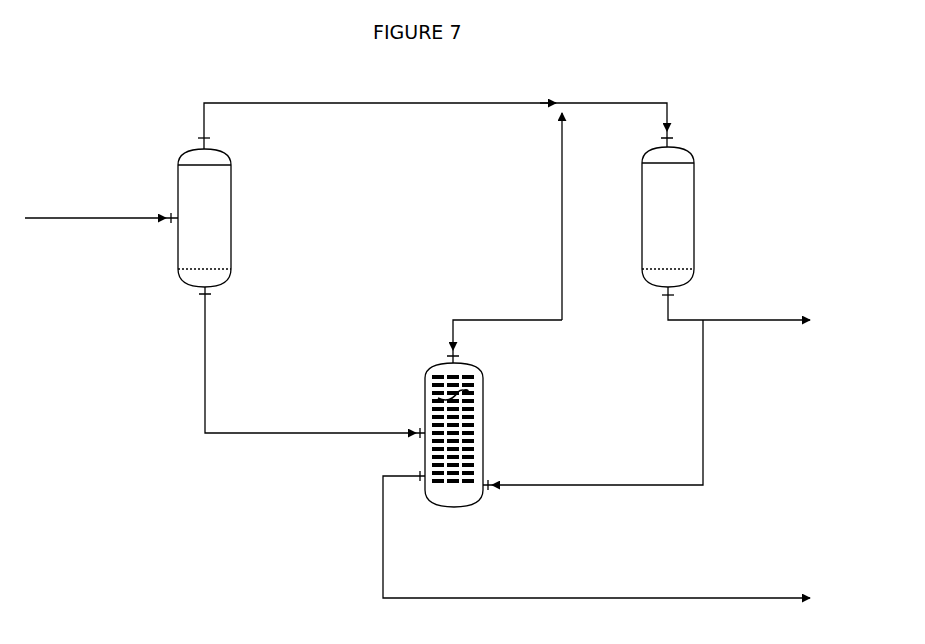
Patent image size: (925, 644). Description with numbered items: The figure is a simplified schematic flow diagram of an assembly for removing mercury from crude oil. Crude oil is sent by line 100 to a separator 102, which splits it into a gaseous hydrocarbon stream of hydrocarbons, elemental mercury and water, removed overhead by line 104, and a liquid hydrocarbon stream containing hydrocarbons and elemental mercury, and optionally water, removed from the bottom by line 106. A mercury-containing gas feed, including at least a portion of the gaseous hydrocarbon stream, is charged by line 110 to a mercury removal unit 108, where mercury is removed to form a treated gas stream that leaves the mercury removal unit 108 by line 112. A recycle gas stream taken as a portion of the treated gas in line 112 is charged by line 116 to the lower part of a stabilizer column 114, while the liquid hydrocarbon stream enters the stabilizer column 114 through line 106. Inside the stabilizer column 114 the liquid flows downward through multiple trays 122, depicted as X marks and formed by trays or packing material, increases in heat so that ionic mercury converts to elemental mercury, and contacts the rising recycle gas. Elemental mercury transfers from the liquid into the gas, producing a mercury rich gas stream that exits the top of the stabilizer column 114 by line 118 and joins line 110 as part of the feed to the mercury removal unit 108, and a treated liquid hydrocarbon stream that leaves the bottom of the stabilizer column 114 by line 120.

The line 100 is at (78, 216).
The separator 102 is at (233, 218).
The line 104 is at (255, 103).
The line 106 is at (206, 366).
The mercury removal unit 108 is at (695, 217).
The line 110 is at (616, 103).
The line 112 is at (683, 322).
The stabilizer column 114 is at (484, 433).
The line 116 is at (705, 402).
The line 118 is at (506, 318).
The line 120 is at (738, 598).
The trays 122 is at (438, 398).